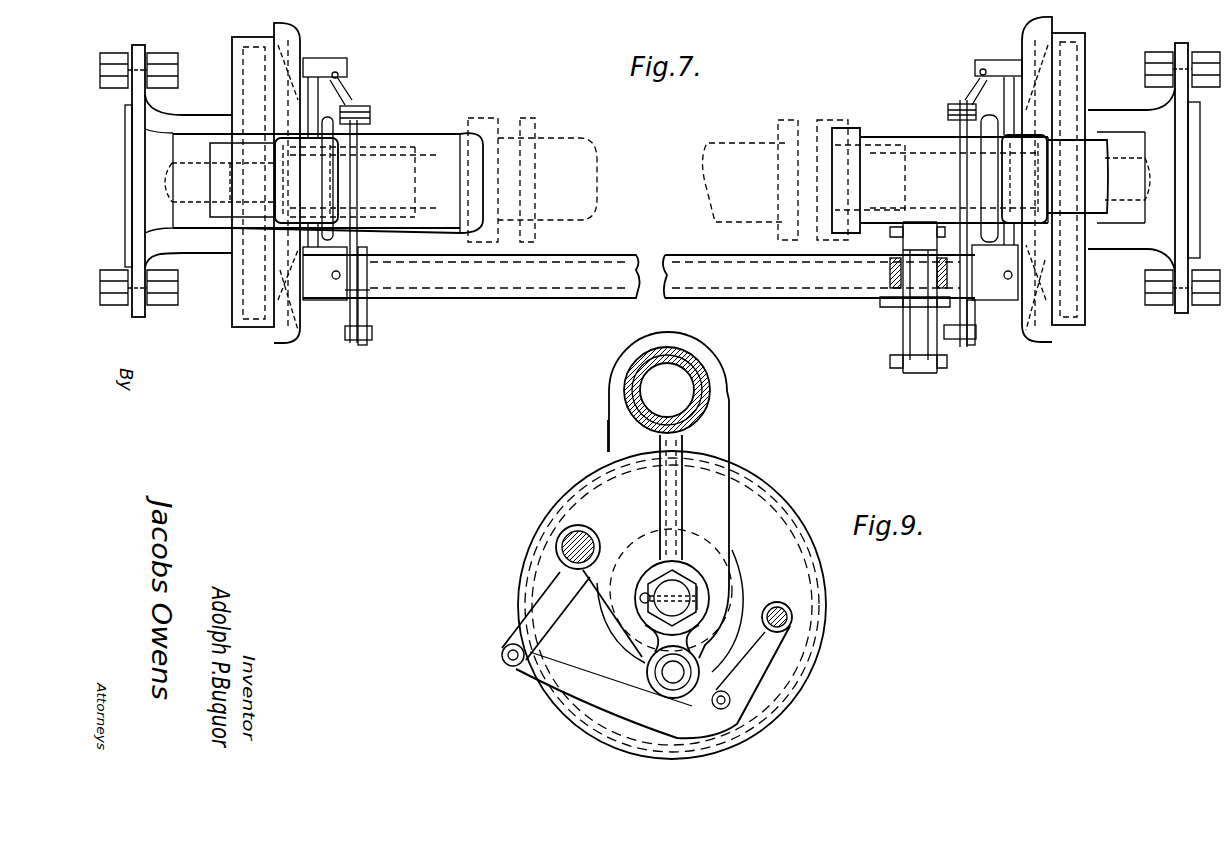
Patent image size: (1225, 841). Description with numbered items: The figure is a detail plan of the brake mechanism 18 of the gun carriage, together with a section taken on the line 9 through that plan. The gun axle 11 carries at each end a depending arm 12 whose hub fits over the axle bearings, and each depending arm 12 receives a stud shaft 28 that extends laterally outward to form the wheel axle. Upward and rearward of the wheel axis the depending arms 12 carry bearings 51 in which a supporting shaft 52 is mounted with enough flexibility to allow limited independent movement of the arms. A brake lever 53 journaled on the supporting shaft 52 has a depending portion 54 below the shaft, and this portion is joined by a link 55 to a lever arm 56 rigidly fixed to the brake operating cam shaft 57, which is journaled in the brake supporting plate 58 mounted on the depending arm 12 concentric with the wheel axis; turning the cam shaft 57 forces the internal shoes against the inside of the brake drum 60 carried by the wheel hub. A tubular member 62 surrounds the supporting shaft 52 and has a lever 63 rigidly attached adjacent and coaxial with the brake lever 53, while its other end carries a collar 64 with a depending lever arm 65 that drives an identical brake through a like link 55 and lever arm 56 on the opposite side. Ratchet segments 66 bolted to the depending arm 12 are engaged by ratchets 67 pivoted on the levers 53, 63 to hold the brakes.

In FIG. 7, the section line 9— 9 is at (445, 180).
In FIG. 7, the gun axle 11 is at (750, 143).
In FIG. 9, the gun axle 11 is at (697, 396).
In FIG. 7, the depending arms 12 is at (918, 137).
In FIG. 9, the depending arms 12 is at (713, 549).
In FIG. 7, the brake mechanism 18 is at (580, 283).
In FIG. 9, the stud shafts 28 is at (664, 607).
In FIG. 7, the bearings 51 is at (993, 302).
In FIG. 7, the supporting shaft 52 is at (1000, 290).
In FIG. 9, the supporting shaft 52 is at (556, 538).
In FIG. 7, the brake lever 53 is at (955, 228).
In FIG. 7, the depending portion 54 is at (962, 345).
In FIG. 7, the link 55 is at (365, 243).
In FIG. 9, the link 55 is at (600, 704).
In FIG. 9, the lever arm 56 is at (763, 652).
In FIG. 7, the brake operating cam shaft 57 is at (975, 75).
In FIG. 9, the brake operating cam shaft 57 is at (792, 613).
In FIG. 7, the brake supporting plate 58 is at (1005, 58).
In FIG. 7, the brake drum 60 is at (255, 340).
In FIG. 9, the brake drum 60 is at (672, 605).
In FIG. 7, the tubular member 62 is at (745, 302).
In FIG. 7, the lever 63 is at (897, 270).
In FIG. 7, the collar 64 is at (368, 302).
In FIG. 9, the collar 64 is at (594, 534).
In FIG. 7, the lever arm 65 is at (362, 283).
In FIG. 9, the lever arm 65 is at (530, 604).
In FIG. 7, the ratchet segments 66 is at (900, 241).
In FIG. 7, the ratchets 67 is at (900, 320).